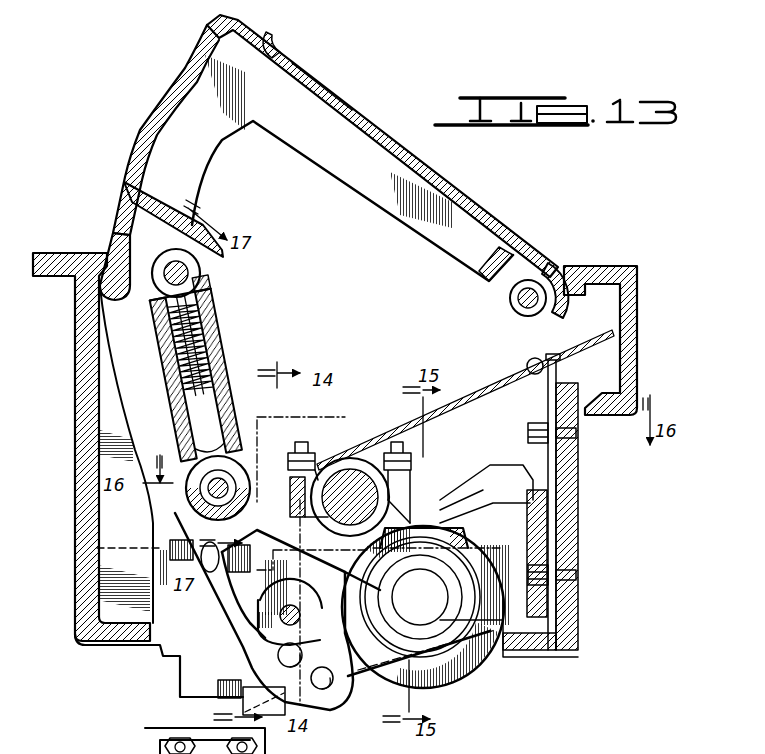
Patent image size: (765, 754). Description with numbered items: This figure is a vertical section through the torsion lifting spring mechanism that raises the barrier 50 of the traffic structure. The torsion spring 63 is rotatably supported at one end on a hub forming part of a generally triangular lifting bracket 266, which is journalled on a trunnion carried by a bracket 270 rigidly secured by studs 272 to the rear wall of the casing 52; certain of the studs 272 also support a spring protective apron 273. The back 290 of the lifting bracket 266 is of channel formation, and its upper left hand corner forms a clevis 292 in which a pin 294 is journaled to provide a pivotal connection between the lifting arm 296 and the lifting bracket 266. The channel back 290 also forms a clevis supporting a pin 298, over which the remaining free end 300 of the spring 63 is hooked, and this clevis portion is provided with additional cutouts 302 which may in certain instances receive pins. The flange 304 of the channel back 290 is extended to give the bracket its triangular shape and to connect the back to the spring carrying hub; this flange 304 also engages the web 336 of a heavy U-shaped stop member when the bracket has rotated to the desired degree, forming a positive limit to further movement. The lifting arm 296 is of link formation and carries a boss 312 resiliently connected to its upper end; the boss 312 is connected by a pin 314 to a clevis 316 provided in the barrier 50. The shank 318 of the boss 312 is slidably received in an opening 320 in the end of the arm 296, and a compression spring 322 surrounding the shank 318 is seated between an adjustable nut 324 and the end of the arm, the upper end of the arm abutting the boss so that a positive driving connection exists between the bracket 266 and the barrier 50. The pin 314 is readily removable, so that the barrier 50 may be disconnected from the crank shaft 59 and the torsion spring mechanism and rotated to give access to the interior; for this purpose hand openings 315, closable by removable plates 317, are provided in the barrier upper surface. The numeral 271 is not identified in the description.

The barrier 50 is at (462, 198).
The casing 52 is at (630, 351).
The crank shaft 59 is at (346, 490).
The torsion spring 63 is at (462, 665).
The lifting bracket 266 is at (336, 712).
The bracket 270 is at (462, 470).
The studs 272 is at (582, 452).
The spring protective apron 273 is at (462, 397).
The back 290 is at (220, 604).
The clevis 292 is at (156, 521).
The pin 294 is at (240, 470).
The lifting arm 296 is at (224, 341).
The pin 298 is at (292, 606).
The free end of spring 300 is at (262, 646).
The cutouts 302 is at (323, 682).
The flange 304 is at (375, 498).
The boss 312 is at (202, 289).
The pin 314 is at (114, 238).
The hand openings 315 is at (280, 52).
The clevis 316 is at (176, 206).
The removable plates 317 is at (306, 88).
The shank 318 is at (161, 351).
The opening 320 is at (213, 304).
The compression spring 322 is at (220, 322).
The adjustable nut 324 is at (236, 367).
The web 336 is at (290, 480).
The cover block 271 is at (145, 744).